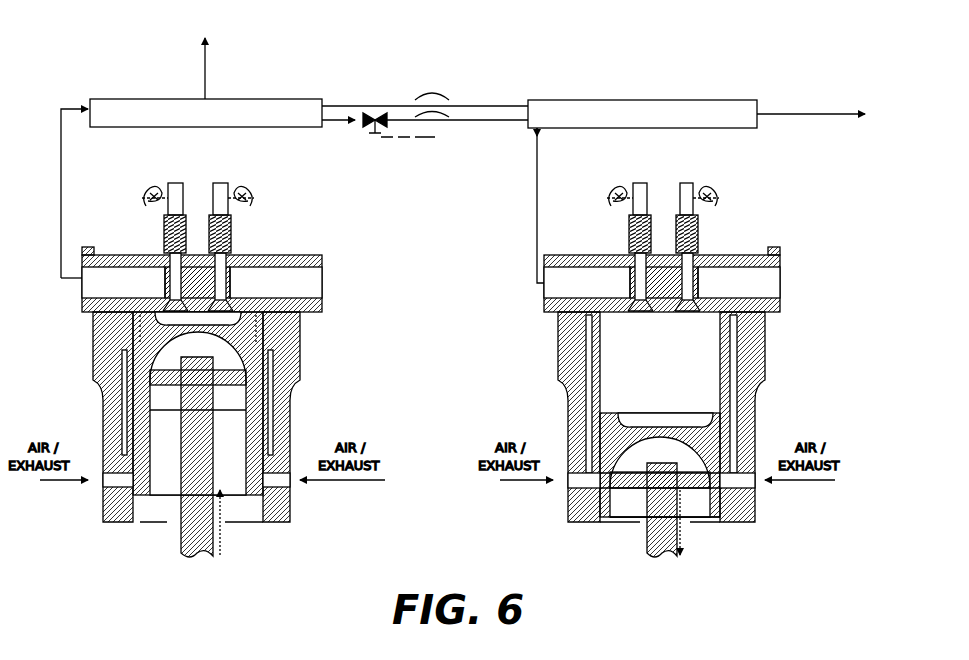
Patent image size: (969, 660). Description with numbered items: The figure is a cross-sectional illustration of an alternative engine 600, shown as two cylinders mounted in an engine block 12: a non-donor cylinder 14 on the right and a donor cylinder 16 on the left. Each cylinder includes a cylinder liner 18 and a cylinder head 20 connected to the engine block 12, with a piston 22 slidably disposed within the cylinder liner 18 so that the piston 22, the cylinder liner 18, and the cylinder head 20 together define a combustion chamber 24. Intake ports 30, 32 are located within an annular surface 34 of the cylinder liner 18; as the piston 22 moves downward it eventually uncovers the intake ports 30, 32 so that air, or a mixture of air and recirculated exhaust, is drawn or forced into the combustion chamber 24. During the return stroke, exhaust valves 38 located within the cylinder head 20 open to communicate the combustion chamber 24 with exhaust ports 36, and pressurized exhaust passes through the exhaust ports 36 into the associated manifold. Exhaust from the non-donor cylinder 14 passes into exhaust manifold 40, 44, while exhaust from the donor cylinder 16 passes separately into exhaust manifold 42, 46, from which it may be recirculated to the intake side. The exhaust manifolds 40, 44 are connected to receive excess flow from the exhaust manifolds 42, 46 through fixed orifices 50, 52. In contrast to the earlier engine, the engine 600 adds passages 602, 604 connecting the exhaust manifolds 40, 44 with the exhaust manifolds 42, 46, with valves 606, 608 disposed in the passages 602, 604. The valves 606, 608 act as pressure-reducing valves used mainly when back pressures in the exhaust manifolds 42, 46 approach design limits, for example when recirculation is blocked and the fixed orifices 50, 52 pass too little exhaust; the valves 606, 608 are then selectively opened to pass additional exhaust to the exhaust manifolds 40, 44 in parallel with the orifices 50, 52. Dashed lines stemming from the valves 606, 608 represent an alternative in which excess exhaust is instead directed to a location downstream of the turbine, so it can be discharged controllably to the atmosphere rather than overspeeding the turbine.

The engine 600 is at (338, 80).
The second exhaust manifold 42 is at (206, 113).
The exhaust manifold 46 is at (206, 113).
The first exhaust manifold 40 is at (642, 114).
The exhaust manifold 44 is at (642, 114).
The orifice 50 is at (432, 89).
The orifice 52 is at (432, 97).
The passage 602 is at (345, 139).
The passage 604 is at (335, 121).
The valve 606 is at (425, 150).
The valve 608 is at (375, 134).
The cylinder head 20 is at (194, 268).
The exhaust valves 38 is at (176, 298).
The combustion chamber 24 is at (232, 316).
The exhaust ports 36 is at (133, 312).
The piston 22 is at (120, 352).
The cylinder liner 18 is at (282, 372).
The donor cylinder 16 is at (272, 407).
The non-donor cylinder 14 is at (562, 383).
The engine block 12 is at (291, 428).
The intake port 32 is at (107, 487).
The intake port 30 is at (567, 487).
The annular surface 34 is at (136, 505).